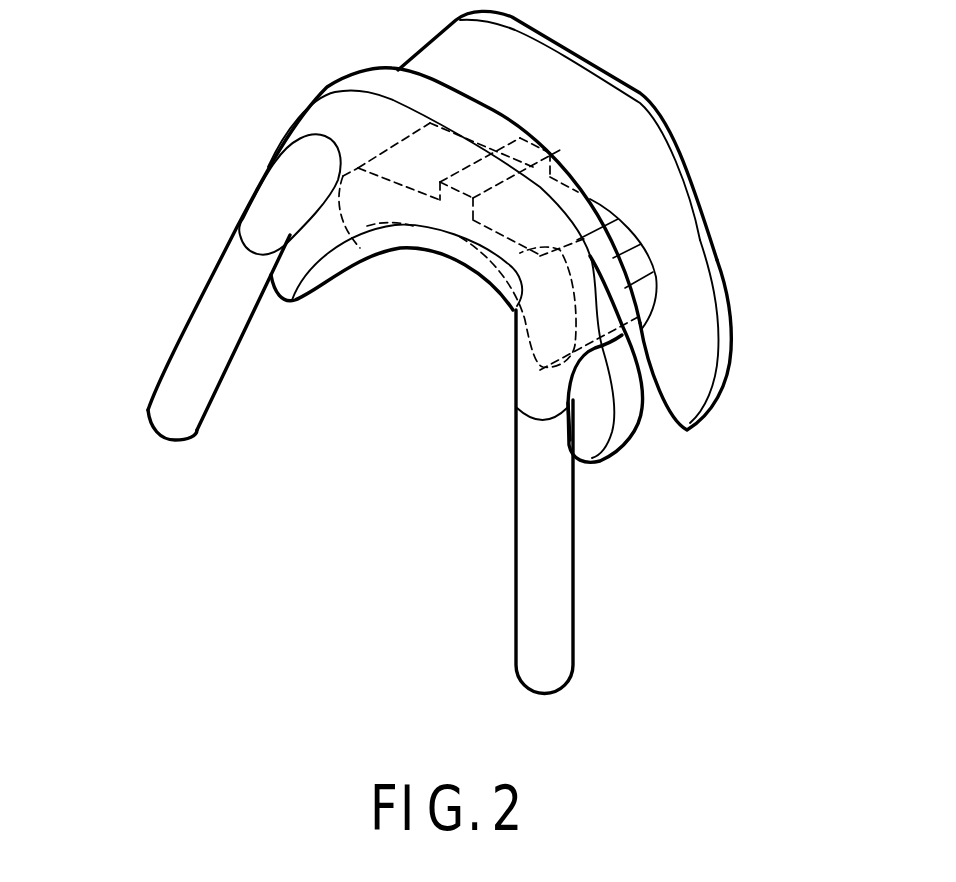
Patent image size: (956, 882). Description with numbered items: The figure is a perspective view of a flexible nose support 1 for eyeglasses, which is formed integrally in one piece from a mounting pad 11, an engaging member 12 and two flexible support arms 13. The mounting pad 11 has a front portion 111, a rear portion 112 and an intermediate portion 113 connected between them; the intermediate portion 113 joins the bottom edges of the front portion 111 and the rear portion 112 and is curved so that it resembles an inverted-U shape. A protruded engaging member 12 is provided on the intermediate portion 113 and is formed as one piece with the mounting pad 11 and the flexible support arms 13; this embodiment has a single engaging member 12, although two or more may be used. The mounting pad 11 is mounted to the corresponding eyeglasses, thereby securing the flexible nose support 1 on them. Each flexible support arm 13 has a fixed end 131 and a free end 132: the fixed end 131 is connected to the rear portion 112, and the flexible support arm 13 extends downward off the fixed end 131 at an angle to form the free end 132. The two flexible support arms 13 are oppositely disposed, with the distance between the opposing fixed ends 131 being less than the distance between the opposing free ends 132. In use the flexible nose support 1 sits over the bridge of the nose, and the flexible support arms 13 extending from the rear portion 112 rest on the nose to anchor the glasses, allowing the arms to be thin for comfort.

The flexible nose support 1 is at (160, 45).
The mounting pad 11 is at (826, 232).
The front portion 111 is at (673, 233).
The rear portion 112 is at (600, 401).
The intermediate portion 113 is at (638, 270).
The engaging member 12 is at (522, 152).
The flexible support arm 13 is at (100, 228).
The fixed end 131 is at (270, 205).
The free end 132 is at (180, 407).